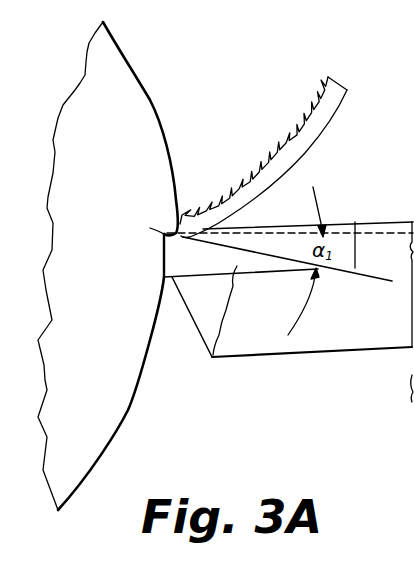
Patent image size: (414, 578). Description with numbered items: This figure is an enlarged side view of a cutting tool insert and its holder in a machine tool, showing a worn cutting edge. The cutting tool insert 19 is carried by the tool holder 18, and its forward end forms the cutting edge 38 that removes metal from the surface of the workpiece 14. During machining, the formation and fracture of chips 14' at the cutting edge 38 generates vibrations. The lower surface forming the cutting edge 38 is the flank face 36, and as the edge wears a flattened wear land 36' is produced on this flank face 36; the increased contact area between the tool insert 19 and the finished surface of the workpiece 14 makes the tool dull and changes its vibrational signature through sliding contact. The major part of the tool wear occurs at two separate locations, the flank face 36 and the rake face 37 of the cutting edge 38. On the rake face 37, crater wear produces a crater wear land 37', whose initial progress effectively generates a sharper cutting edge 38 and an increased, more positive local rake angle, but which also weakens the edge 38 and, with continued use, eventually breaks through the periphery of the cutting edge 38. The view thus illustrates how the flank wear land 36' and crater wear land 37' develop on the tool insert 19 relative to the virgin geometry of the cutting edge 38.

The workpiece 14 is at (108, 266).
The chips 14' is at (263, 145).
The tool holder 18 is at (340, 346).
The cutting tool insert 19 is at (212, 357).
The flank face 36 is at (201, 290).
The flank wear land 36' is at (123, 255).
The rake face 37 is at (290, 261).
The crater wear land 37' is at (274, 297).
The cutting edge 38 is at (161, 232).